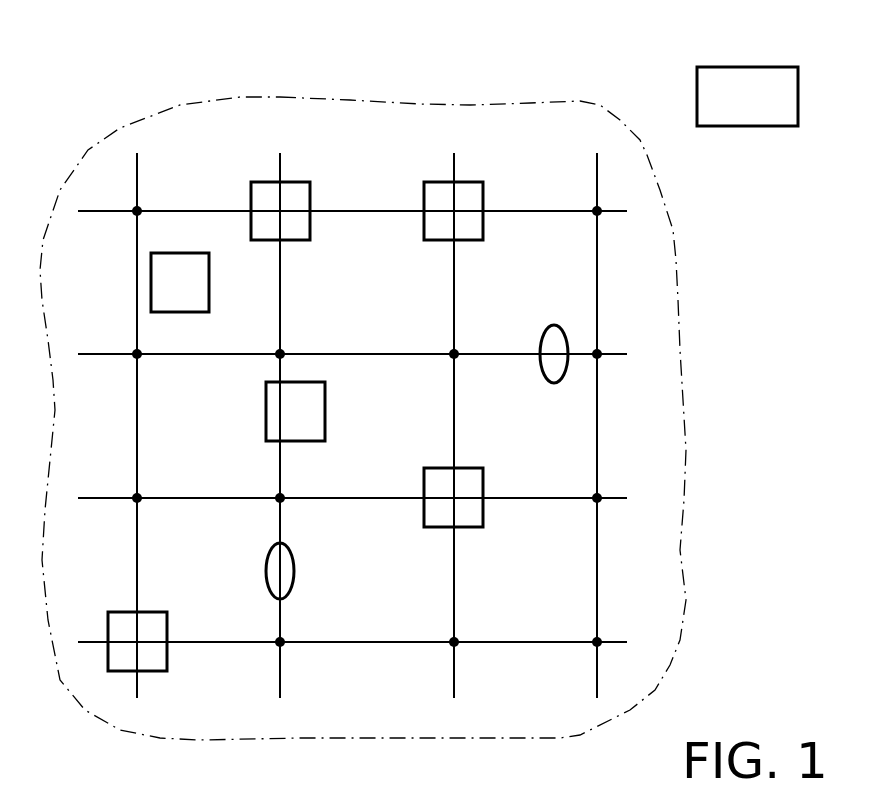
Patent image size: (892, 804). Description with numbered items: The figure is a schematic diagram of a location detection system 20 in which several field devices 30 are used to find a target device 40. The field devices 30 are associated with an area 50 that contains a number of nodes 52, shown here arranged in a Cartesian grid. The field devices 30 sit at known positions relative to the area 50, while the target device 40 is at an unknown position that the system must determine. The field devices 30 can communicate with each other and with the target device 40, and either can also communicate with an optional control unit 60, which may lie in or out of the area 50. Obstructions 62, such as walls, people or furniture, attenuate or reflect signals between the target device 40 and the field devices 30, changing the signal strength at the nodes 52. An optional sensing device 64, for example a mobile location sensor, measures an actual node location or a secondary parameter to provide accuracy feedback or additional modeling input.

The location detection system 20 is at (253, 128).
The field device 30 is at (290, 192).
The target device 40 is at (312, 413).
The area 50 is at (682, 553).
The node 52 is at (603, 350).
The control unit 60 is at (743, 78).
The obstruction 62 is at (556, 341).
The sensing device 64 is at (195, 280).